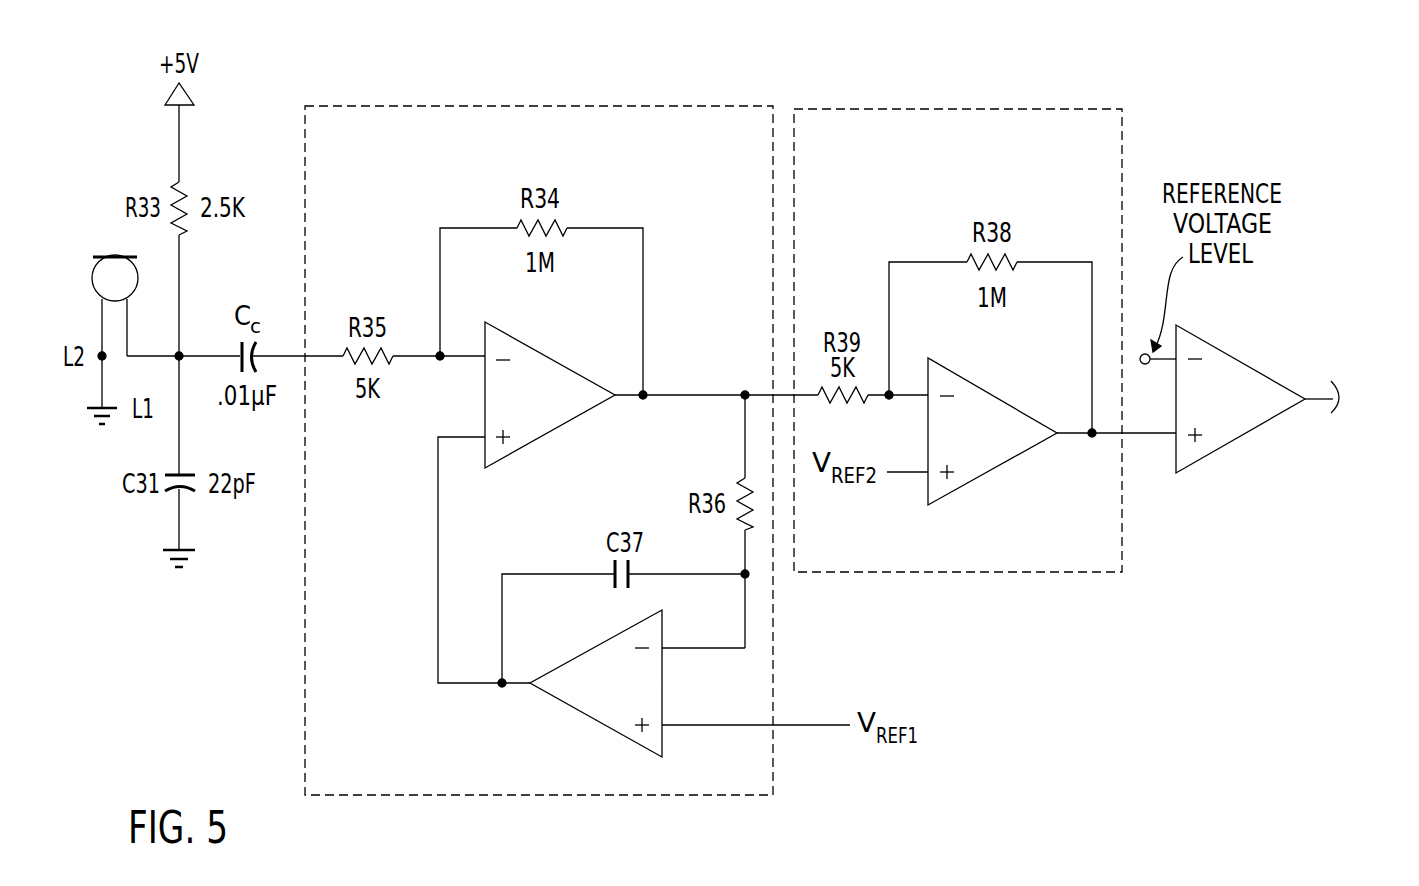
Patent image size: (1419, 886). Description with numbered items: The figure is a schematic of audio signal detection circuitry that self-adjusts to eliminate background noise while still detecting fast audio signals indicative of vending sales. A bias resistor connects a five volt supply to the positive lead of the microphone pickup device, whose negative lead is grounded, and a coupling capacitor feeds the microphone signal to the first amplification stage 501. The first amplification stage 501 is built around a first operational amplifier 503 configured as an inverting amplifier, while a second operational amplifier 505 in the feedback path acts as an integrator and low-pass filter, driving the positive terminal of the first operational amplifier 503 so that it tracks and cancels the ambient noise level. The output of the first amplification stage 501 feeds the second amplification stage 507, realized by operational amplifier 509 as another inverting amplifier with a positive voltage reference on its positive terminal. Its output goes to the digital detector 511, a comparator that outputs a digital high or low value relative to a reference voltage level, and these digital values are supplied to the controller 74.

The first amplification stage 501 is at (350, 105).
The first operational amplifier 503 is at (571, 434).
The second operational amplifier 505 is at (575, 708).
The second amplification stage 507 is at (935, 108).
The operational amplifier 509 is at (985, 470).
The digital detector 511 is at (1200, 460).
The controller 74 is at (1357, 517).